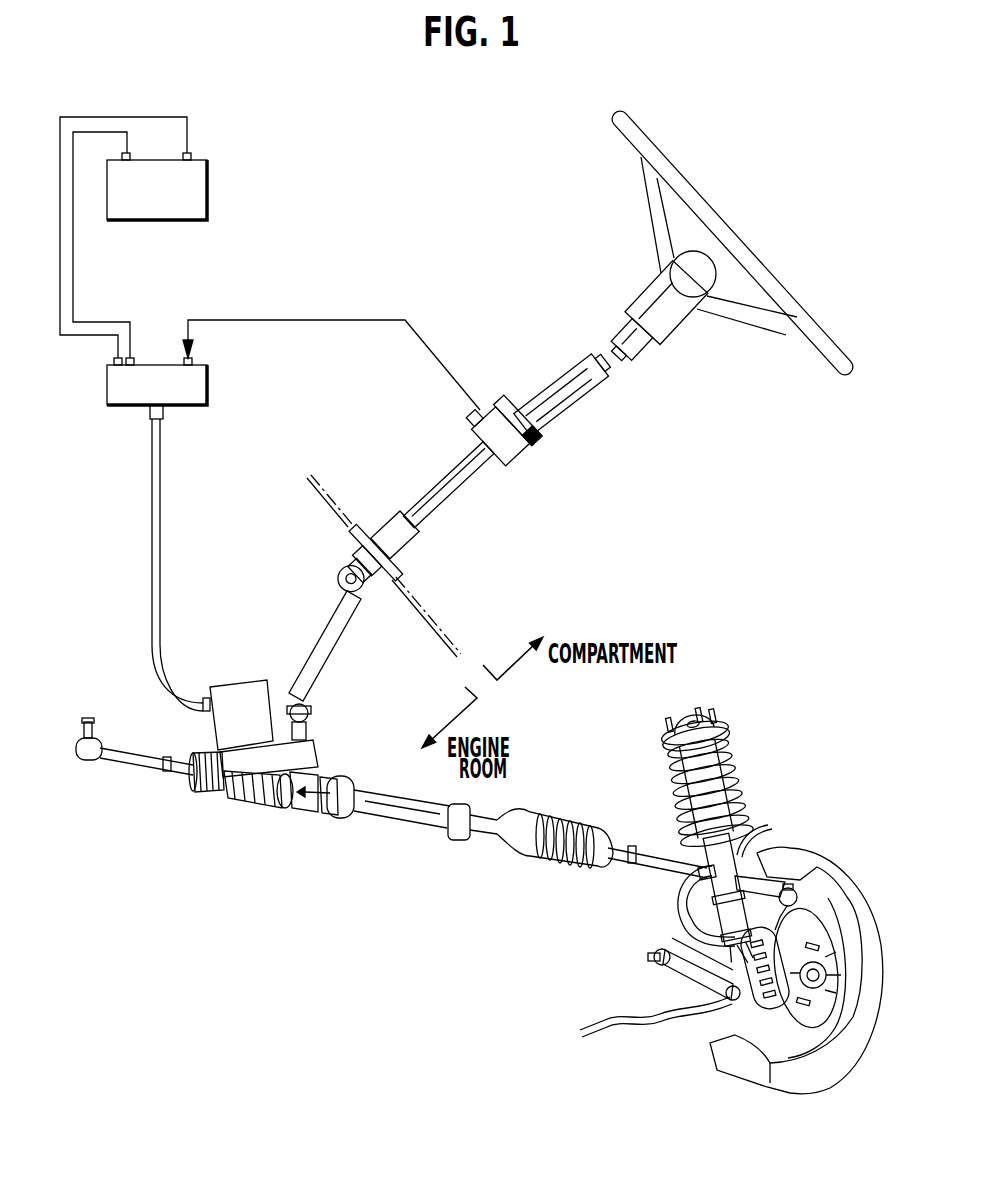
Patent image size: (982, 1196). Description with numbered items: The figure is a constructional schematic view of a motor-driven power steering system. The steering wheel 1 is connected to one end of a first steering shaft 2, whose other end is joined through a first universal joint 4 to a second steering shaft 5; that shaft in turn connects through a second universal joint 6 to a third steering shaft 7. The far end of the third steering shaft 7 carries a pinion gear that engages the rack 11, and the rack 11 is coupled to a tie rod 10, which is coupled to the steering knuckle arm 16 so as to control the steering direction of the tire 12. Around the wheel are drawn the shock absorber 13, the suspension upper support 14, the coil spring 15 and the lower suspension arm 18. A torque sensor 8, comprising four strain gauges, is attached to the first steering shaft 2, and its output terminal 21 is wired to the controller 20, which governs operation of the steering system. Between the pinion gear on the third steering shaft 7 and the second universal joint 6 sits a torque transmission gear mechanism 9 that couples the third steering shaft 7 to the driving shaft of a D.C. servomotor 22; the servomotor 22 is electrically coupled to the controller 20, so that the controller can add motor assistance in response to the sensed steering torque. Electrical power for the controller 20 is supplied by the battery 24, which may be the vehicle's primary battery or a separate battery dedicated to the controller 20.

The steering wheel 1 is at (707, 200).
The first steering shaft 2 is at (598, 365).
The first universal joint 4 is at (350, 568).
The second steering shaft 5 is at (325, 632).
The second universal joint 6 is at (305, 720).
The third steering shaft 7 is at (300, 790).
The torque sensor 8 is at (525, 462).
The torque transmission gear mechanism 9 is at (230, 757).
The tie rod 10 is at (140, 760).
The rack 11 is at (265, 805).
The tire 12 is at (810, 1070).
The shock absorber 13 is at (740, 858).
The suspension upper support 14 is at (720, 720).
The coil spring 15 is at (733, 770).
The steering knuckle arm 16 is at (800, 878).
The lower suspension arm 18 is at (680, 960).
The controller 20 is at (207, 385).
The output terminal 21 is at (479, 410).
The D.C. servomotor 22 is at (240, 690).
The battery 24 is at (197, 190).